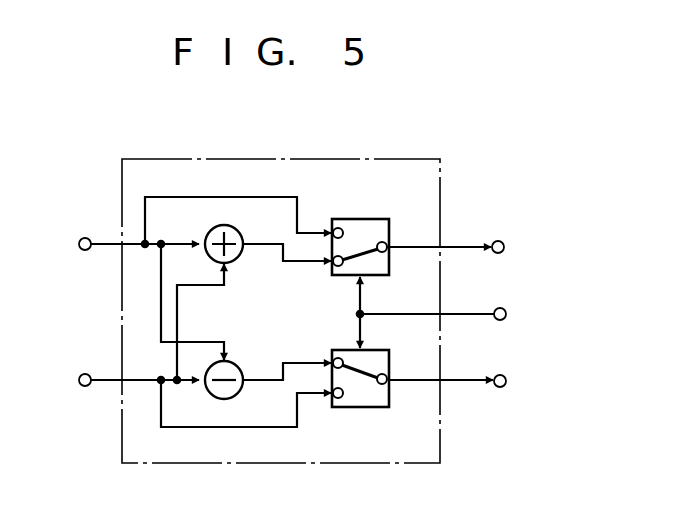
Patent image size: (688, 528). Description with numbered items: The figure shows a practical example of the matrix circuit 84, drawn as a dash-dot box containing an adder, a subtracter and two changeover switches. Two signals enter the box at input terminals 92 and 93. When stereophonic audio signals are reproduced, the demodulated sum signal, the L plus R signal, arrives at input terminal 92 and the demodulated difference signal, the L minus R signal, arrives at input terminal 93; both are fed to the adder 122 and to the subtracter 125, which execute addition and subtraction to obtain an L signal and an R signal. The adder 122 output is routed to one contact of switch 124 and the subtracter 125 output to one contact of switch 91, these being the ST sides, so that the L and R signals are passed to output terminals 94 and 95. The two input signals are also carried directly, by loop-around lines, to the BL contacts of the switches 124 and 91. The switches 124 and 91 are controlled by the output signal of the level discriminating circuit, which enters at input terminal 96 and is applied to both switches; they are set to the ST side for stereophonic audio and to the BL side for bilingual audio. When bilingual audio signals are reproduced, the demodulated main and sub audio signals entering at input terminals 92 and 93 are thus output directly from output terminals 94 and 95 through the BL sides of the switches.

The matrix circuit 84 is at (427, 160).
The switch 91 is at (371, 407).
The input terminal 92 is at (80, 238).
The input terminal 93 is at (80, 374).
The output terminal 94 is at (504, 242).
The output terminal 95 is at (506, 386).
The input terminal 96 is at (506, 315).
The adder 122 is at (236, 257).
The switch 124 is at (375, 219).
The subtractor 125 is at (258, 342).